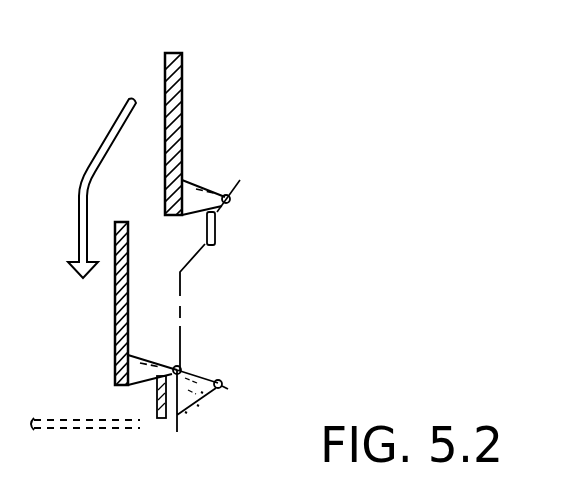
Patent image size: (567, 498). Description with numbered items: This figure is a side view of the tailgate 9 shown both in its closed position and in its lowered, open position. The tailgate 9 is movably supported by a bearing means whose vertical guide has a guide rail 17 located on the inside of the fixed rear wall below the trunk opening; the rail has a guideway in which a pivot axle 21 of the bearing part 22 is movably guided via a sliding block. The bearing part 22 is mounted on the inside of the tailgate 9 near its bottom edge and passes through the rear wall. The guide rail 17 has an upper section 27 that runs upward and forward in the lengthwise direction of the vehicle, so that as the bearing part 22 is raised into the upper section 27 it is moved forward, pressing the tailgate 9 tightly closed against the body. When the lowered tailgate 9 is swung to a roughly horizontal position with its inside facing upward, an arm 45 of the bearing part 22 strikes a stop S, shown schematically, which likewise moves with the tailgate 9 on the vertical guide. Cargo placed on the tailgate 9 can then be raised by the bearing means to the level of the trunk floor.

The tailgate 9 is at (165, 72).
The pivot axle 21 is at (231, 202).
The upper section 27 is at (200, 246).
The guide rail 17 is at (182, 337).
The stop S is at (227, 382).
The arm 45 is at (157, 406).
The bearing part 22 is at (160, 380).